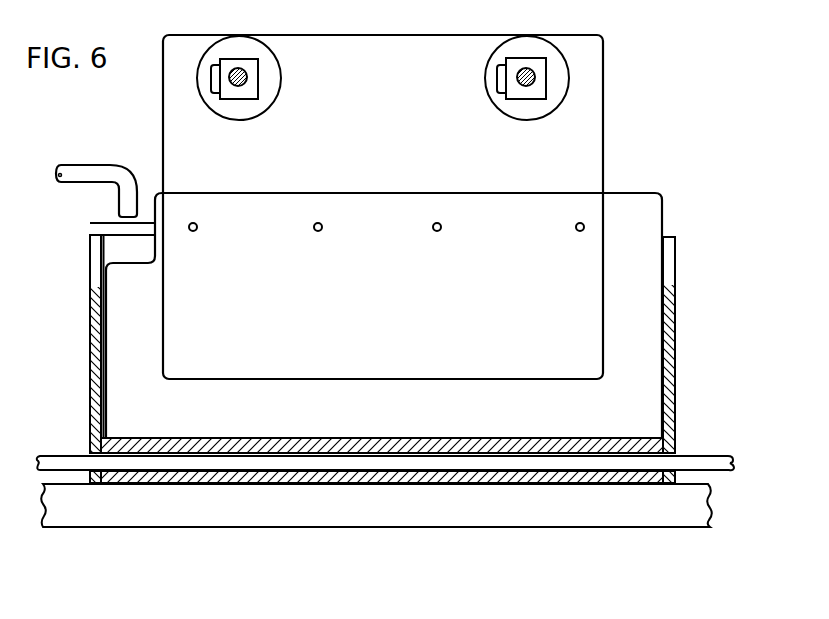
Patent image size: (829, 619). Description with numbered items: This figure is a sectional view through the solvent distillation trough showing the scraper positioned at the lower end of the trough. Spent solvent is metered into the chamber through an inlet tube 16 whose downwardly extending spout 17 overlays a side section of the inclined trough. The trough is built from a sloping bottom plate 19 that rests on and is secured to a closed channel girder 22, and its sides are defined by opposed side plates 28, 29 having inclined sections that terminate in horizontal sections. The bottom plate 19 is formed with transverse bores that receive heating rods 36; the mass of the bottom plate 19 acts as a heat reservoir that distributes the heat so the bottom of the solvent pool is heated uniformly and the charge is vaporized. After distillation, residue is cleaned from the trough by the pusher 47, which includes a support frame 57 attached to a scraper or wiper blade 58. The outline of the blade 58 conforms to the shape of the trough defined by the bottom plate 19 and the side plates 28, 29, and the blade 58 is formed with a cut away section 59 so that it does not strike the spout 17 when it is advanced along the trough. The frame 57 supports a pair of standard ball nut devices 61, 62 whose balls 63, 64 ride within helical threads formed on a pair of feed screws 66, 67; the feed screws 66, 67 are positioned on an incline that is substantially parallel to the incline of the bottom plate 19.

The inlet tube 16 is at (84, 170).
The spout 17 is at (123, 208).
The bottom plate 19 is at (130, 442).
The closed channel girder 22 is at (210, 523).
The side plate 28 is at (676, 315).
The side plate 29 is at (90, 326).
The heating rod 36 is at (693, 459).
The pusher 47 is at (415, 222).
The support frame 57 is at (603, 160).
The scraper blade 58 is at (663, 200).
The cut away section 59 is at (152, 224).
The ball nut device 61 is at (516, 74).
The ball nut device 62 is at (242, 74).
The ball 63 is at (514, 79).
The ball 64 is at (230, 82).
The feed screw 66 is at (529, 70).
The feed screw 67 is at (246, 68).